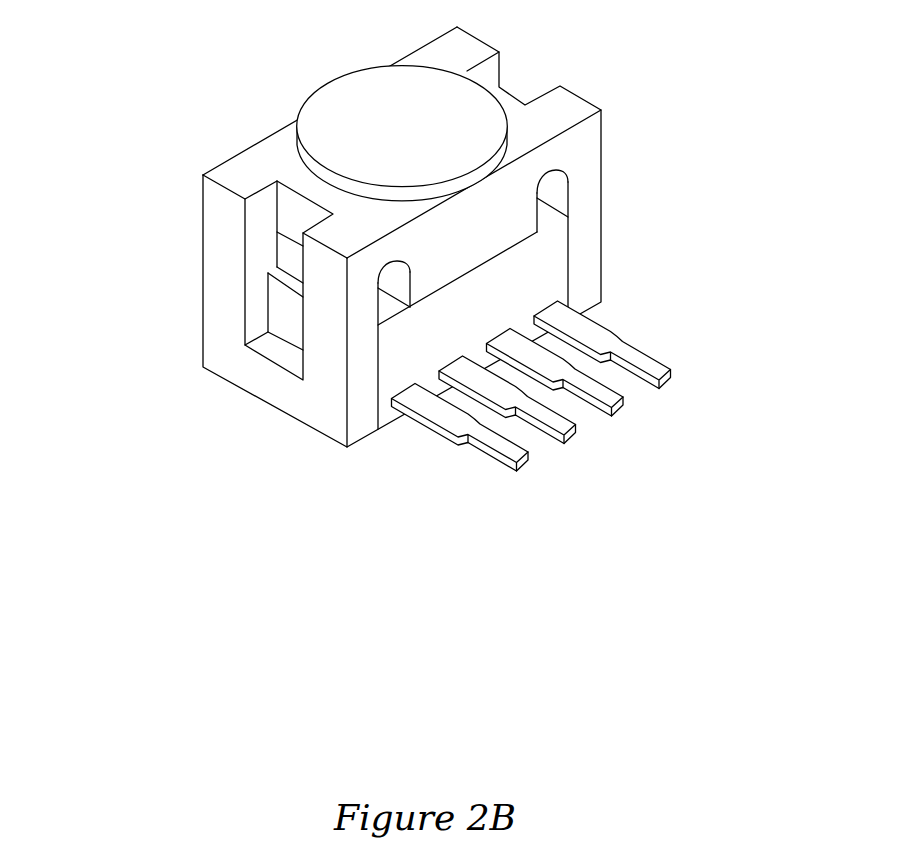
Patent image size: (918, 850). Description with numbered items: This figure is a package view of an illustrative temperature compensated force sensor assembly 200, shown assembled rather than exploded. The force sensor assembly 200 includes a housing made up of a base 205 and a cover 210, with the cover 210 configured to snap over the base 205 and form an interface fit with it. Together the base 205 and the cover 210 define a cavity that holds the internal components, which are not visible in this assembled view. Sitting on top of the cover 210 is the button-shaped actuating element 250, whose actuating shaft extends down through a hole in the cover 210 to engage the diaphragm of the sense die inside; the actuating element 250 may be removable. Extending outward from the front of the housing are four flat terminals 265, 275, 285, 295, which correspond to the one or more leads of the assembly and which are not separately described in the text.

The temperature compensated force sensor assembly 200 is at (401, 261).
The base 205 is at (396, 362).
The cover 210 is at (583, 233).
The actuating element 250 is at (353, 100).
The contact terminal 265 is at (530, 462).
The contact terminal 275 is at (578, 435).
The contact terminal 285 is at (625, 407).
The contact terminal 295 is at (672, 380).